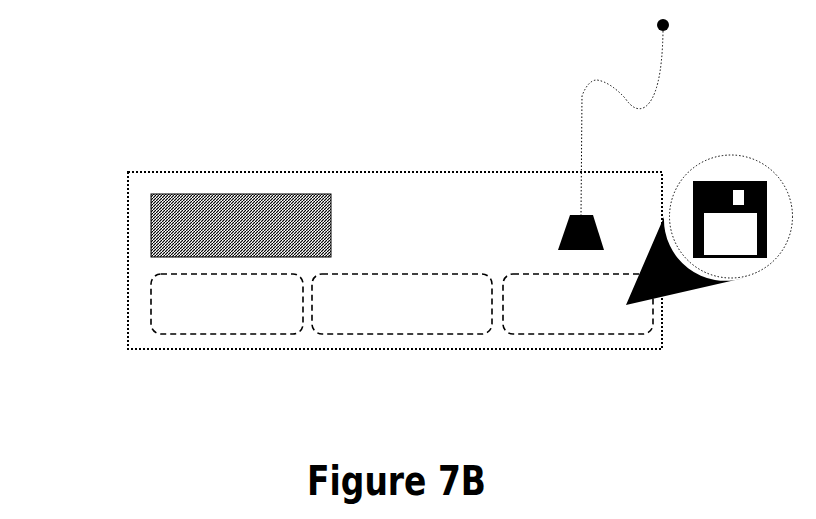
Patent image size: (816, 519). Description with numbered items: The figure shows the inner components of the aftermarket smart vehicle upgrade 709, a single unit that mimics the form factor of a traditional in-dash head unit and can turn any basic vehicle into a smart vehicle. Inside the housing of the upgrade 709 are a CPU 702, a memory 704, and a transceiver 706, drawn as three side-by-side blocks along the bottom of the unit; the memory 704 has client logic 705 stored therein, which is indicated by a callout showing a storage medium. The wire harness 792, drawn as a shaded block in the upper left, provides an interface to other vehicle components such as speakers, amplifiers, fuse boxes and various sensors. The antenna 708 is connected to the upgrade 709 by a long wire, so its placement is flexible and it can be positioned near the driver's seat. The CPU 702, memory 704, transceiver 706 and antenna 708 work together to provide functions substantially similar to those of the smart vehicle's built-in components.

The CPU 702 is at (395, 335).
The memory 704 is at (575, 335).
The client logic 705 is at (721, 157).
The transceiver 706 is at (218, 335).
The antenna 708 is at (664, 72).
The aftermarket smart vehicle upgrade 709 is at (197, 170).
The wire harness 792 is at (148, 225).